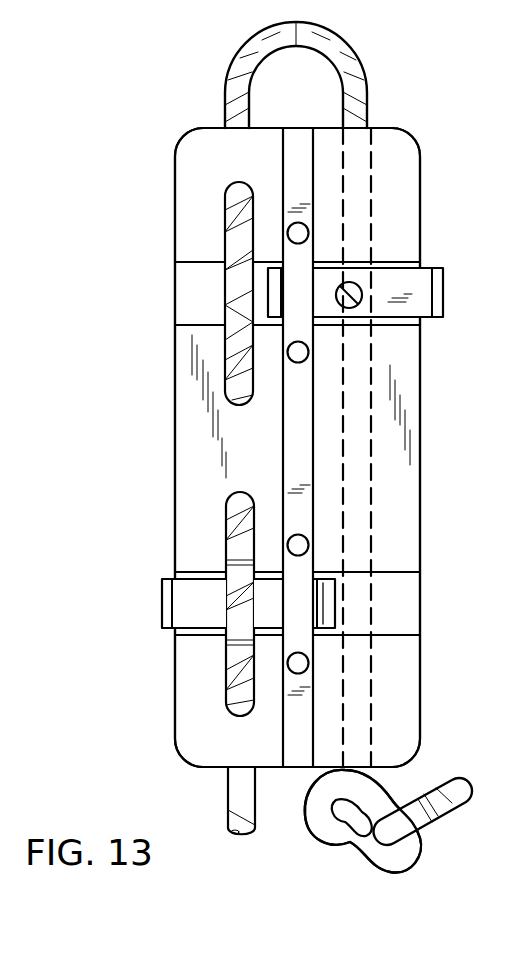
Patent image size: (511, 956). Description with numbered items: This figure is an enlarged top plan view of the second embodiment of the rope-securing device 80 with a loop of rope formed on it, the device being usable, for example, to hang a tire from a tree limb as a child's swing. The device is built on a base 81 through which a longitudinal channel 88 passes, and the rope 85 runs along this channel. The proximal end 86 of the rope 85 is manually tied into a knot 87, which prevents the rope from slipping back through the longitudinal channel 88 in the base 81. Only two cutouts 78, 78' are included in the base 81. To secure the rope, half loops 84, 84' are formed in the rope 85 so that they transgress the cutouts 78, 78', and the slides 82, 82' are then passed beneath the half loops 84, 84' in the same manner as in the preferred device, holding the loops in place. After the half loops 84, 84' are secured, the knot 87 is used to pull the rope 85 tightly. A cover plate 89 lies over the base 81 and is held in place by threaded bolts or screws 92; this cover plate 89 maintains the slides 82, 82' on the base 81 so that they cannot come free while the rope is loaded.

The rope-securing device 80 is at (163, 104).
The base 81 is at (402, 146).
The half loop 84 is at (229, 276).
The half loop 84' is at (220, 604).
The cutout 78 is at (192, 298).
The cutout 78' is at (192, 605).
The slide 82 is at (373, 266).
The slide 82' is at (219, 596).
The longitudinal channel 88 is at (382, 209).
The cover plate 89 is at (295, 418).
The threaded bolts or screws 92 is at (300, 340).
The rope 85 is at (228, 792).
The proximal end 86 is at (430, 758).
The knot 87 is at (323, 825).